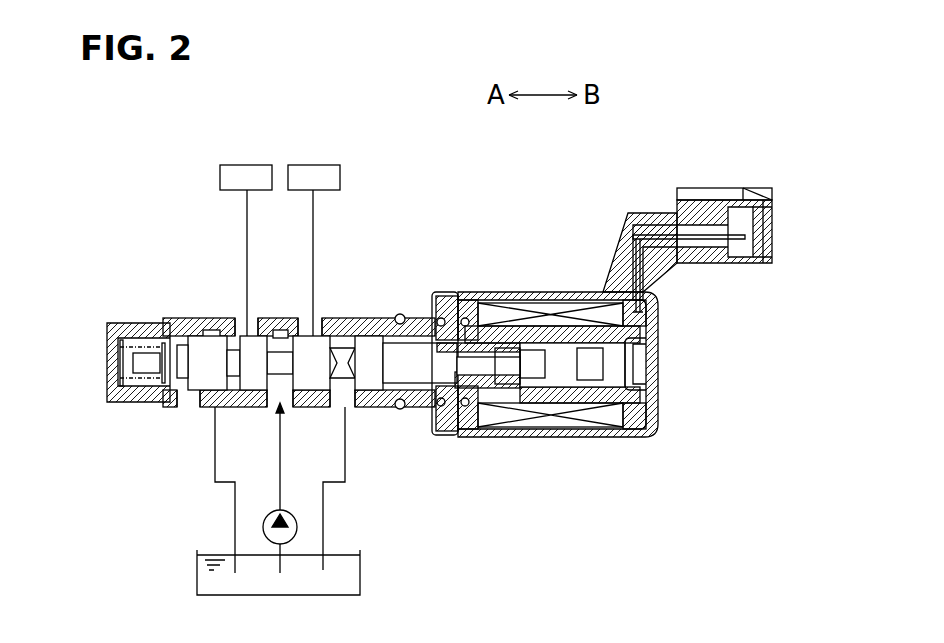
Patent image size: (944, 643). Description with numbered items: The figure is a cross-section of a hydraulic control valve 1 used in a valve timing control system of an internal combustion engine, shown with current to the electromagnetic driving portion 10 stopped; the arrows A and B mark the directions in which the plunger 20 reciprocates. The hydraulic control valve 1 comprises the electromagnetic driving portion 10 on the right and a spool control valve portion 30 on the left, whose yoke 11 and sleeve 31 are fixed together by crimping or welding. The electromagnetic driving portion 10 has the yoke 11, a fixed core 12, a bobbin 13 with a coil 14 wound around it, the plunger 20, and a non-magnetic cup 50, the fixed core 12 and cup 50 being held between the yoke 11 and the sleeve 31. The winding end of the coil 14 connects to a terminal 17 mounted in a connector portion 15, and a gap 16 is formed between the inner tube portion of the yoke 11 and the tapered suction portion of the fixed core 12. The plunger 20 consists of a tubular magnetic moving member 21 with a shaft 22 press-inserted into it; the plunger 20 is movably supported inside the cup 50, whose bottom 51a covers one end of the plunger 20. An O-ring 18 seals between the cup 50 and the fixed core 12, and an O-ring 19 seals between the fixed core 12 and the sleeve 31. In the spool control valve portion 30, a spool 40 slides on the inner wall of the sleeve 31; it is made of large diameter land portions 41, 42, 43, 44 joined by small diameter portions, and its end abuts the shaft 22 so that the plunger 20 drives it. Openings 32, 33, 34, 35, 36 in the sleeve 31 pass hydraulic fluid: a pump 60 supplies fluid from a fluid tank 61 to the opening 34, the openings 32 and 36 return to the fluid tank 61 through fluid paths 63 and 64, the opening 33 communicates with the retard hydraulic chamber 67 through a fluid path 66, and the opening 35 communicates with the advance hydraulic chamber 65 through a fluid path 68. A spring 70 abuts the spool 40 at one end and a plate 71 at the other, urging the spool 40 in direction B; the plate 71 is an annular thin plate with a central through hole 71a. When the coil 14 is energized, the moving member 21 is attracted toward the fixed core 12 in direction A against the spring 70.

The hydraulic control valve 1 is at (708, 177).
The electromagnetic driving portion 10 is at (662, 444).
The yoke 11 is at (572, 437).
The fixed core 12 is at (440, 298).
The bobbin 13 is at (473, 300).
The coil 14 is at (610, 437).
The connector base 15 is at (641, 200).
The gap 16 is at (552, 300).
The terminal 17 is at (720, 233).
The O-ring 18 is at (470, 437).
The O-ring 19 is at (443, 437).
The plunger 20 is at (518, 430).
The moving member 21 is at (593, 377).
The shaft 22 is at (500, 437).
The spool control valve portion 30 is at (378, 298).
The sleeve 31 is at (175, 322).
The opening 32 is at (212, 410).
The opening 33 is at (237, 325).
The opening 34 is at (273, 410).
The opening 35 is at (325, 325).
The opening 36 is at (348, 410).
The spool 40 is at (192, 330).
The large diameter portion 41 is at (182, 380).
The large diameter portion 42 is at (262, 336).
The large diameter portion 43 is at (318, 395).
The large diameter portion 44 is at (368, 392).
The cup 50 is at (528, 326).
The bottom 51a is at (616, 377).
The pump 60 is at (263, 527).
The fluid tank 61 is at (197, 578).
The fluid path 63 is at (215, 480).
The fluid path 64 is at (347, 484).
The advance hydraulic chamber 65 is at (318, 166).
The fluid path 66 is at (247, 210).
The retard hydraulic chamber 67 is at (236, 166).
The fluid path 68 is at (313, 212).
The spring 70 is at (128, 322).
The plate 71 is at (120, 350).
The through hole 71a is at (120, 362).